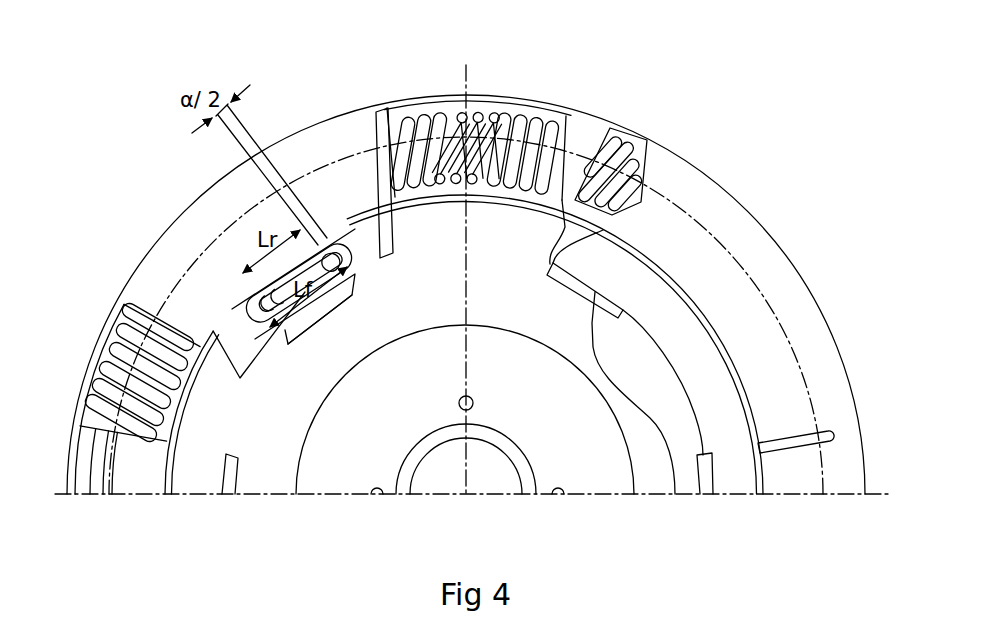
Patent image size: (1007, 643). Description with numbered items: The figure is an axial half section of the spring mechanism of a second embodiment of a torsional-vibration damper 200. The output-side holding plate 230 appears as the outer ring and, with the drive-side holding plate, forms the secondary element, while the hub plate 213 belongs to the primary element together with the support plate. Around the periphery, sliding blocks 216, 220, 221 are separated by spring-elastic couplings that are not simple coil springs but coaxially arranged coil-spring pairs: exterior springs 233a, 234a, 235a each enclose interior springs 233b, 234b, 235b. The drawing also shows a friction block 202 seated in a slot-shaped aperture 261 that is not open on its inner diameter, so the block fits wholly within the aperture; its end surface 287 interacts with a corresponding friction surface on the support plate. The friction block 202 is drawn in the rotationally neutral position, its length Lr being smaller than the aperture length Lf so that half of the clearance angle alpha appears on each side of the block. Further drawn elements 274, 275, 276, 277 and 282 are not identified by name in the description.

The torsional-vibration damper 200 is at (681, 120).
The output-side holding plate 230 is at (712, 207).
The sliding block 220 is at (376, 120).
The sliding block 221 is at (587, 133).
The exterior spring 234a is at (432, 118).
The interior spring 234b is at (373, 122).
The exterior spring 235a is at (630, 135).
The interior spring 235b is at (612, 137).
The exterior spring 233a is at (124, 310).
The interior spring 233b is at (100, 350).
The friction block 202 is at (260, 310).
The aperture 261 is at (240, 378).
The sliding block 216 is at (107, 427).
The tab 274 is at (230, 473).
The end surface 287 is at (290, 300).
The arm 275 is at (330, 300).
The hub 282 is at (512, 477).
The hub plate 213 is at (563, 430).
The flange arm 276 is at (674, 496).
The pin 277 is at (703, 472).